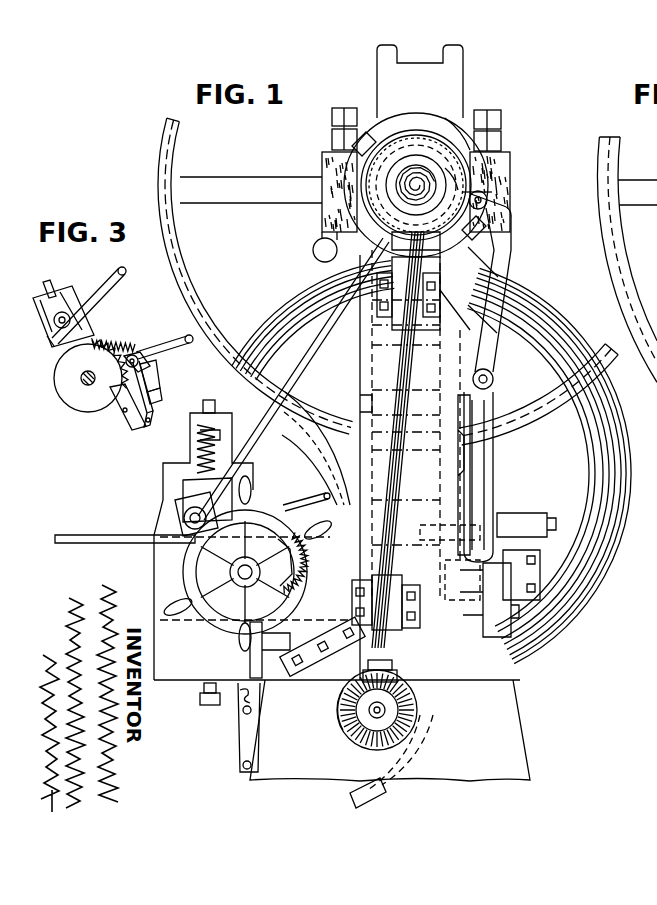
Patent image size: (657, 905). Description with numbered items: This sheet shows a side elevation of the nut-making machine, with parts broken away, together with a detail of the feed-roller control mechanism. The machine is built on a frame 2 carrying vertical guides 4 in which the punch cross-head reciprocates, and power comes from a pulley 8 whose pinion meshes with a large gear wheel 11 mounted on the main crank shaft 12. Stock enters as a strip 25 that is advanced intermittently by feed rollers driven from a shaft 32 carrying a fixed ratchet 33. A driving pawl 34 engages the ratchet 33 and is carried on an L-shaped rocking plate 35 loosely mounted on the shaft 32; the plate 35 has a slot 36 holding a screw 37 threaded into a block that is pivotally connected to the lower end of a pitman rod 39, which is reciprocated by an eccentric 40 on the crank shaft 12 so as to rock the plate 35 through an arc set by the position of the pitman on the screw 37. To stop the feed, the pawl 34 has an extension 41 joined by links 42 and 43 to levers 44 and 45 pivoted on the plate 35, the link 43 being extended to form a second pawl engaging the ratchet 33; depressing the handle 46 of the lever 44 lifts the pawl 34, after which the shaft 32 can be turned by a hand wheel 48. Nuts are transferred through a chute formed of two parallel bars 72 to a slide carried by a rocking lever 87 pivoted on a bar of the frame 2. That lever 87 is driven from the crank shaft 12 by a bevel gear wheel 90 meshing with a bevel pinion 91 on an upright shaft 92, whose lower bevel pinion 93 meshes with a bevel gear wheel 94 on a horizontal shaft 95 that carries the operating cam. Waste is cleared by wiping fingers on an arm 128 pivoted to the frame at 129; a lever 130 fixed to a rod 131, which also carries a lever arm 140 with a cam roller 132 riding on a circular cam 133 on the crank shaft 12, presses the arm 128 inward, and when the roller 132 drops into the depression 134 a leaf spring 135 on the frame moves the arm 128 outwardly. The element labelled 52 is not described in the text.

In FIG. 1, the frame 2 is at (480, 277).
In FIG. 1, the vertical guides 4 is at (366, 405).
In FIG. 1, the pulley 8 is at (532, 668).
In FIG. 1, the large gear wheel 11 is at (162, 154).
In FIG. 1, the crank shaft 12 is at (415, 172).
In FIG. 1, the strip 25 is at (118, 540).
In FIG. 1, the shaft 32 is at (238, 573).
In FIG. 3, the shaft 32 is at (86, 384).
In FIG. 1, the ratchet 33 is at (300, 575).
In FIG. 3, the ratchet 33 is at (66, 408).
In FIG. 3, the driving pawl 34 is at (156, 366).
In FIG. 1, the L-shaped rocking plate 35 is at (218, 500).
In FIG. 3, the L-shaped rocking plate 35 is at (48, 344).
In FIG. 3, the slot 36 is at (68, 310).
In FIG. 1, the screw 37 is at (180, 506).
In FIG. 3, the screw 37 is at (50, 282).
In FIG. 1, the pitman rod 39 is at (302, 300).
In FIG. 3, the pitman rod 39 is at (100, 300).
In FIG. 1, the eccentric 40 is at (336, 216).
In FIG. 3, the extension 41 is at (150, 402).
In FIG. 3, the link 42 is at (158, 386).
In FIG. 3, the link 43 is at (150, 420).
In FIG. 3, the lever 44 is at (140, 352).
In FIG. 3, the lever 45 is at (118, 426).
In FIG. 1, the handle 46 is at (320, 514).
In FIG. 3, the handle 46 is at (176, 338).
In FIG. 1, the hand wheel 48 is at (236, 582).
In FIG. 1, the slot 52 is at (450, 525).
In FIG. 1, the parallel bars 72 is at (312, 450).
In FIG. 1, the rocking lever 87 is at (240, 737).
In FIG. 1, the bevel gear wheel 90 is at (392, 178).
In FIG. 1, the bevel pinion 91 is at (314, 244).
In FIG. 1, the upright shaft 92 is at (410, 380).
In FIG. 1, the bevel pinion 93 is at (426, 700).
In FIG. 1, the bevel gear wheel 94 is at (408, 726).
In FIG. 1, the horizontal shaft 95 is at (336, 712).
In FIG. 1, the arm 128 is at (540, 548).
In FIG. 1, the pivot 129 is at (482, 598).
In FIG. 1, the lever 130 is at (494, 446).
In FIG. 1, the rod 131 is at (535, 345).
In FIG. 1, the cam roller 132 is at (490, 188).
In FIG. 1, the circular cam 133 is at (442, 148).
In FIG. 1, the depression 134 is at (460, 170).
In FIG. 1, the leaf spring 135 is at (455, 498).
In FIG. 1, the lever arm 140 is at (512, 250).